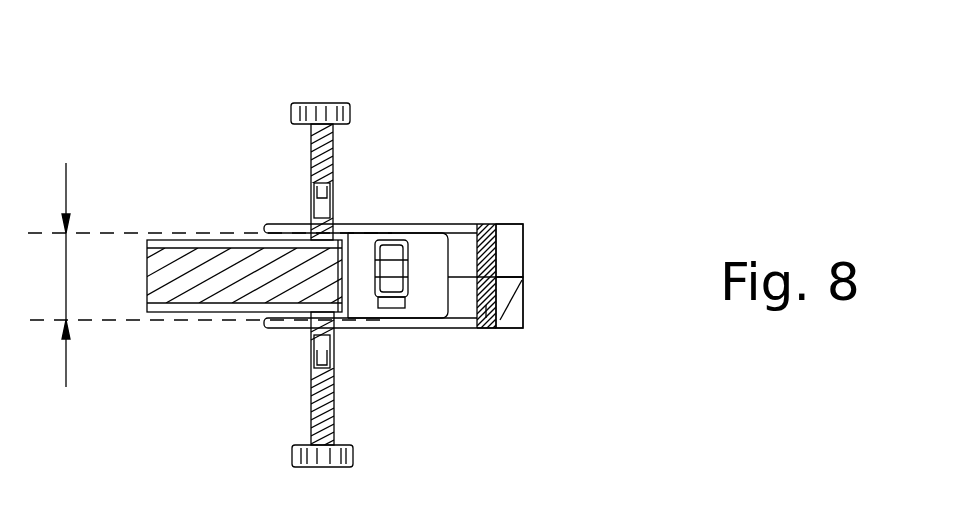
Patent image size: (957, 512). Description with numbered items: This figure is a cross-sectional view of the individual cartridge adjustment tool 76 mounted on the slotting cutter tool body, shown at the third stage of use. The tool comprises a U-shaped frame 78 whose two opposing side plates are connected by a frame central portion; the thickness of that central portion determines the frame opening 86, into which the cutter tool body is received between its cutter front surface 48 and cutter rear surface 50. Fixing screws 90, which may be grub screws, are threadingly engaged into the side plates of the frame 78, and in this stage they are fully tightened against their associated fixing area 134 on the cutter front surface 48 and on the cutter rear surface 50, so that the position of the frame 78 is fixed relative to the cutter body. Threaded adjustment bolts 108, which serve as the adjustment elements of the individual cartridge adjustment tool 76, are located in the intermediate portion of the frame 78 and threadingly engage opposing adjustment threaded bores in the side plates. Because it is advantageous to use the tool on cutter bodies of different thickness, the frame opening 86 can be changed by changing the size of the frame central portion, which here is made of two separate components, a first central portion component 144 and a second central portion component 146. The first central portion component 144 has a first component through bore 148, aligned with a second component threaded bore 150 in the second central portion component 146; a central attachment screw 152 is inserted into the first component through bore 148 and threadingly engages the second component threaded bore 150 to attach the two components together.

The cutter front surface 48 is at (182, 229).
The cutter rear surface 50 is at (182, 326).
The frame opening 86 is at (49, 275).
The U-shaped frame 78 is at (414, 226).
The fixing area 134 is at (312, 218).
The fixing screw 90 is at (342, 200).
The threaded adjustment bolt 108 is at (338, 100).
The first component through bore 148 is at (455, 277).
The individual cartridge adjustment tool 76 is at (528, 212).
The first central portion component 144 is at (513, 248).
The second central portion component 146 is at (515, 313).
The second component threaded bore 150 is at (483, 329).
The central attachment screw 152 is at (489, 322).